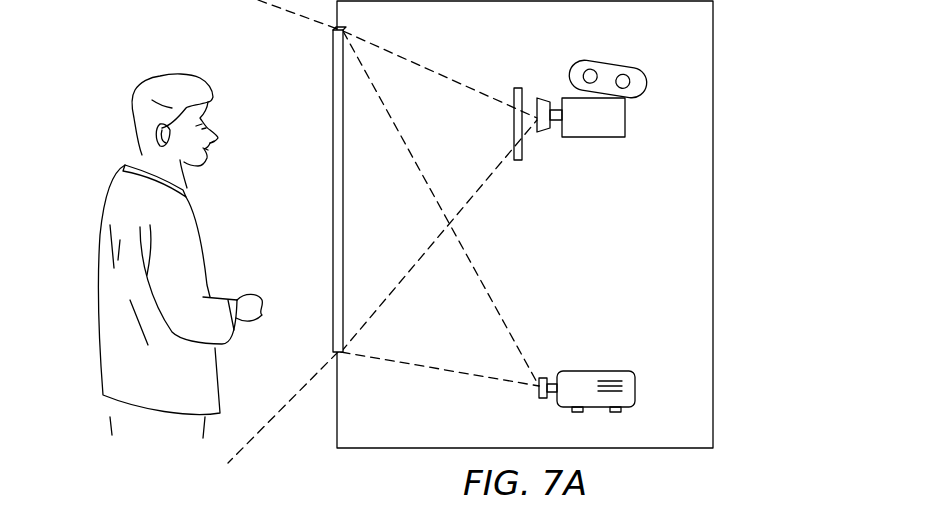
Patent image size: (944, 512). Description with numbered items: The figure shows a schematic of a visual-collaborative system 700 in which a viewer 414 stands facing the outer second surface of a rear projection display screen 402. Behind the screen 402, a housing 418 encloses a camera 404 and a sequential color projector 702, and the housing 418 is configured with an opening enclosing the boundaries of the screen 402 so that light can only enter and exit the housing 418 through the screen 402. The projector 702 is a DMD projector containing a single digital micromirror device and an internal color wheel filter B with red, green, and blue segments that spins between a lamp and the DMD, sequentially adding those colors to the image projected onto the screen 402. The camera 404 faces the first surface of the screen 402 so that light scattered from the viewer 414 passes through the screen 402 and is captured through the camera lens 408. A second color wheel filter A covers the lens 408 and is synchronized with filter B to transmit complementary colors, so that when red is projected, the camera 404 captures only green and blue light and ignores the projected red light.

The viewer 414 is at (110, 187).
The display screen 402 is at (343, 216).
The camera 404 is at (625, 128).
The camera lens 408 is at (540, 133).
The housing 418 is at (718, 196).
The visual-collaborative system 700 is at (738, 48).
The sequential color projector 702 is at (635, 388).